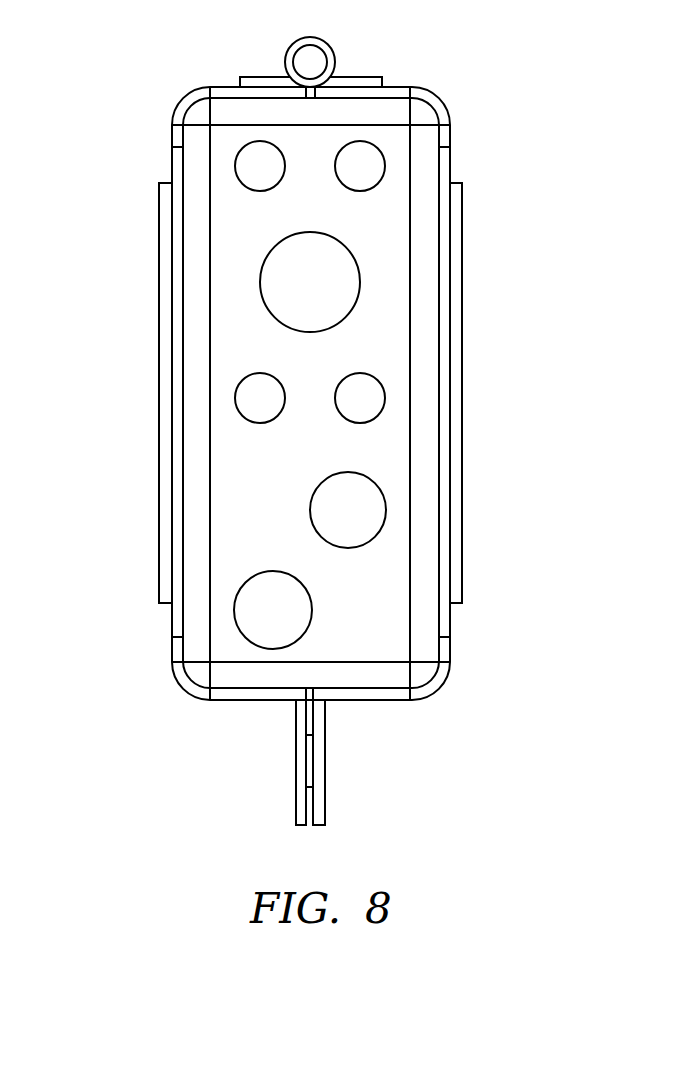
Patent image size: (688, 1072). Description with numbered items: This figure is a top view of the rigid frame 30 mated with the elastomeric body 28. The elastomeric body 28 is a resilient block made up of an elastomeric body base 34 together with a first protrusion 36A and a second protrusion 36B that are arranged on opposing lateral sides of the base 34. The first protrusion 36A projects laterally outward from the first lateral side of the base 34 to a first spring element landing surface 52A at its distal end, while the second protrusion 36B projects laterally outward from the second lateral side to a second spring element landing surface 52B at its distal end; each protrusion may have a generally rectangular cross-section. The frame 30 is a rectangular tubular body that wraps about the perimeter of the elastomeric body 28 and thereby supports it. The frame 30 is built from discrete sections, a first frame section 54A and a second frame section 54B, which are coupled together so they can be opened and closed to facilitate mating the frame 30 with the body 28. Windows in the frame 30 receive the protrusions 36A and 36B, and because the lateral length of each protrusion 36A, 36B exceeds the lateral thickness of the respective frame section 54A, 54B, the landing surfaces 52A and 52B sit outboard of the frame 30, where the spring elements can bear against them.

The elastomeric body 28 is at (380, 118).
The rigid frame 30 is at (442, 94).
The elastomeric body base 34 is at (400, 653).
The first elastomeric body protrusion 36A is at (461, 328).
The second elastomeric body protrusion 36B is at (160, 328).
The first spring element landing surface 52A is at (462, 228).
The second spring element landing surface 52B is at (159, 228).
The first frame section 54A is at (449, 620).
The second frame section 54B is at (173, 620).